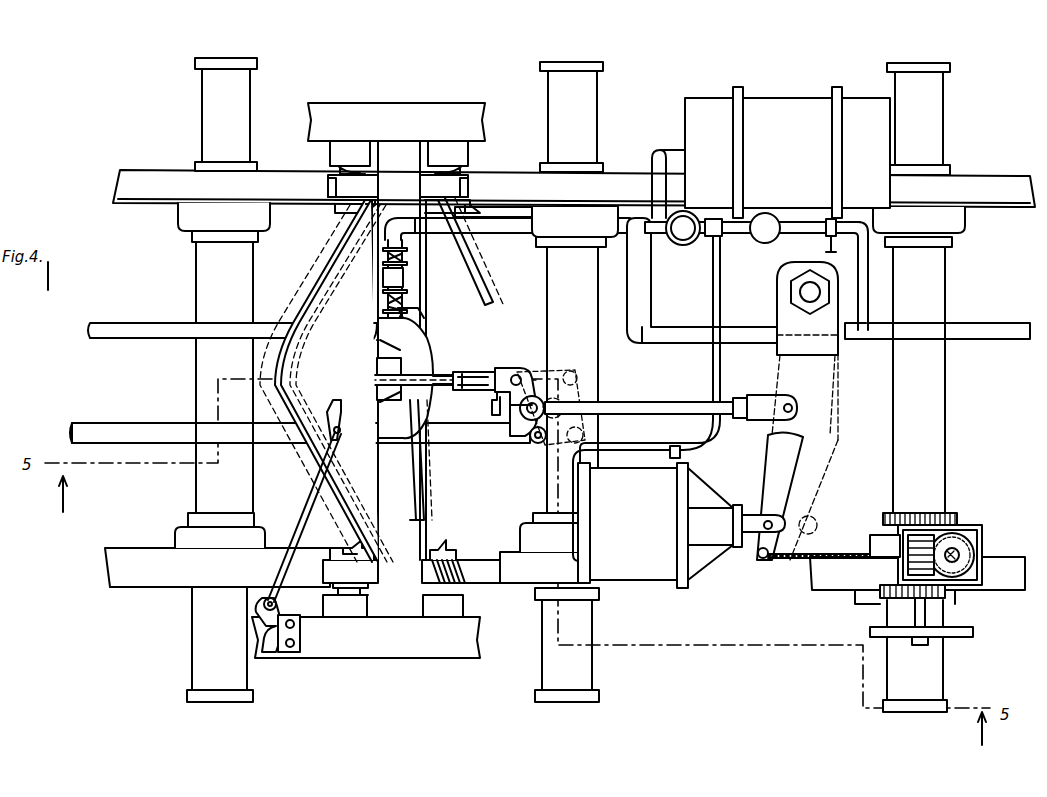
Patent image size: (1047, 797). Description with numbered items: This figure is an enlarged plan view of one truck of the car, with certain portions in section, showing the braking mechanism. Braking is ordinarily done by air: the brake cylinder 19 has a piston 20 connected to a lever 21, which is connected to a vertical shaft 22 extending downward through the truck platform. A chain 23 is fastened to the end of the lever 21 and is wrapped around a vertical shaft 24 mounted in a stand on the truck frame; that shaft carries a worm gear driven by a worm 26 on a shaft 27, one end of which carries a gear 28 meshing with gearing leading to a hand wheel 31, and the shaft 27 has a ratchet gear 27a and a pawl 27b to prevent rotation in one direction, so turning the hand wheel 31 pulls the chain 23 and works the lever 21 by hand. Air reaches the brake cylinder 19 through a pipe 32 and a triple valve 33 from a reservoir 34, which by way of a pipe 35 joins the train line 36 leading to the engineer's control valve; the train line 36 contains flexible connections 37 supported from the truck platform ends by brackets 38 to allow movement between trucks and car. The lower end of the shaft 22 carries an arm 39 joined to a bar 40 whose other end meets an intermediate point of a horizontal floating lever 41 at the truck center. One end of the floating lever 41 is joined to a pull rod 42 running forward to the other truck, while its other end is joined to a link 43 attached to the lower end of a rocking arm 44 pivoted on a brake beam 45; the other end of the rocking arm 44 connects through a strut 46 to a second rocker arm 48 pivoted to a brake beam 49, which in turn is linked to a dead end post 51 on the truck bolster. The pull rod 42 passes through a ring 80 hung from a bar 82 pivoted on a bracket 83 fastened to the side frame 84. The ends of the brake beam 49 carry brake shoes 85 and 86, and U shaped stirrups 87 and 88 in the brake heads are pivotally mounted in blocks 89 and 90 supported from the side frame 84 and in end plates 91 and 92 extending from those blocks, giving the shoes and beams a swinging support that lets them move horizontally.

The brake cylinder 19 is at (638, 572).
The piston 20 is at (752, 514).
The lever 21 is at (800, 470).
The vertical shaft 22 is at (818, 284).
The chain 23 is at (842, 554).
The vertical shaft 24 is at (960, 552).
The worm 26 is at (908, 540).
The shaft 27 is at (898, 572).
The ratchet gear 27a is at (950, 594).
The pawl 27b is at (882, 595).
The gear 28 is at (950, 512).
The hand wheel 31 is at (973, 632).
The pipe 32 is at (714, 312).
The triple valve 33 is at (678, 234).
The reservoir 34 is at (686, 116).
The pipe 35 is at (870, 270).
The train line 36 is at (140, 328).
The flexible connections 37 is at (408, 305).
The brackets 38 is at (384, 278).
The arm 39 is at (778, 366).
The bar 40 is at (648, 402).
The floating lever 41 is at (505, 400).
The pull rod 42 is at (480, 445).
The link 43 is at (510, 374).
The rocking arm 44 is at (480, 374).
The brake beam 45 is at (472, 295).
The strut 46 is at (445, 378).
The rocker arm 48 is at (322, 371).
The brake beam 49 is at (318, 272).
The dead end post 51 is at (400, 435).
The ring 80 is at (334, 418).
The bar 82 is at (308, 492).
The bracket 83 is at (282, 632).
The side frame 84 is at (404, 112).
The brake shoe 85 is at (366, 572).
The brake shoe 86 is at (370, 190).
The U shaped stirrup 87 is at (366, 595).
The U shaped stirrup 88 is at (372, 168).
The block 89 is at (323, 603).
The block 90 is at (330, 155).
The end plate 91 is at (333, 548).
The end plate 92 is at (338, 212).